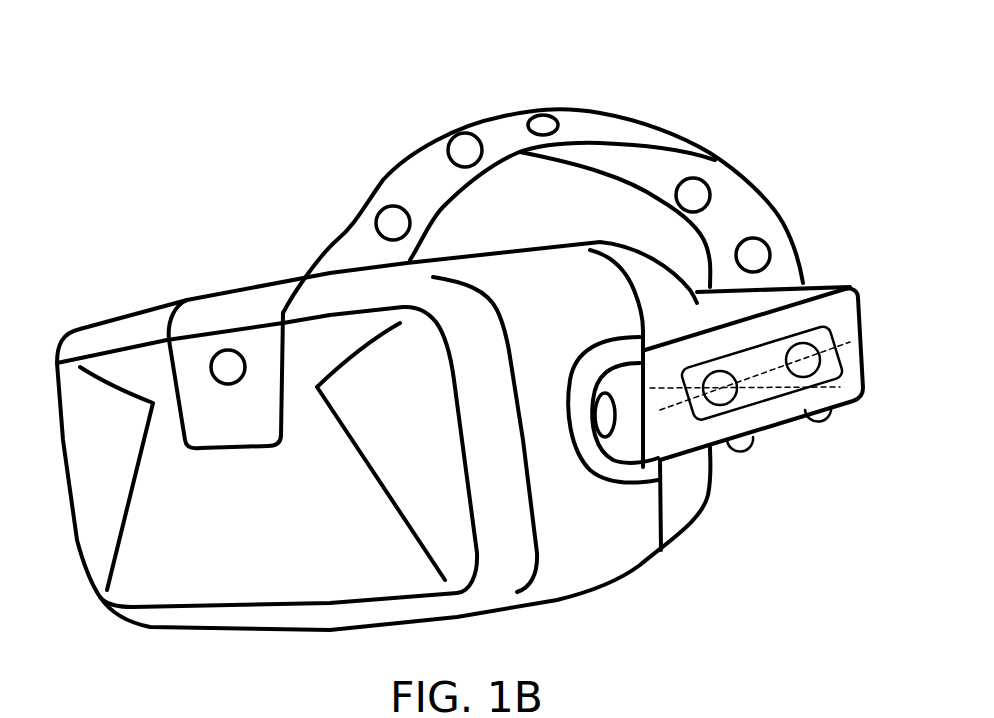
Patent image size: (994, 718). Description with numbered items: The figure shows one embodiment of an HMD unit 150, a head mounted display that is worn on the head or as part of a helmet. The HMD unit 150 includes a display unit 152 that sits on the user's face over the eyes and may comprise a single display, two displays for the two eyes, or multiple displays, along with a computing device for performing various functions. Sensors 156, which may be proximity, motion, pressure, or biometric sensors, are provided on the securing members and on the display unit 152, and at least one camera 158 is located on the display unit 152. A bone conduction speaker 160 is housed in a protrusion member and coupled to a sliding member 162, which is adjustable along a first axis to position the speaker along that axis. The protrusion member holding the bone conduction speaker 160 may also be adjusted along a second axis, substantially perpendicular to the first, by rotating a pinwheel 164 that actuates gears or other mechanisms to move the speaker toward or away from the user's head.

The HMD unit 150 is at (152, 103).
The display unit 152 is at (97, 556).
The sensors 156 is at (677, 197).
The camera 158 is at (213, 376).
The bone conduction speaker 160 is at (730, 376).
The sliding member 162 is at (862, 346).
The pinwheel 164 is at (843, 410).